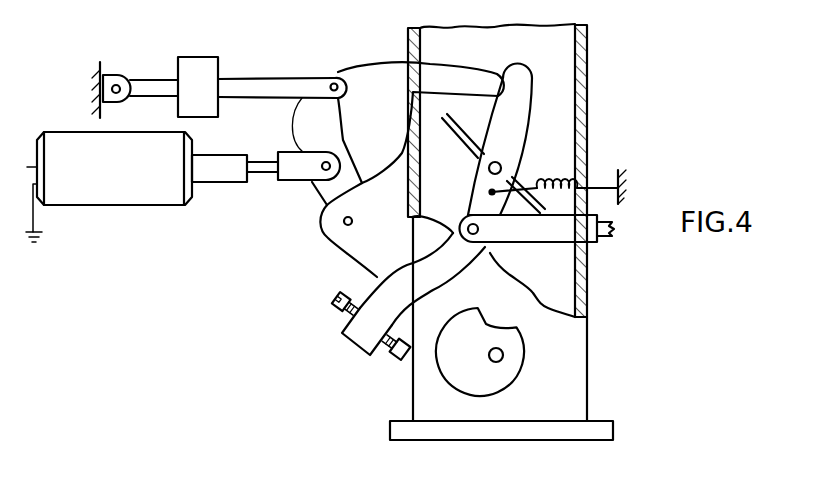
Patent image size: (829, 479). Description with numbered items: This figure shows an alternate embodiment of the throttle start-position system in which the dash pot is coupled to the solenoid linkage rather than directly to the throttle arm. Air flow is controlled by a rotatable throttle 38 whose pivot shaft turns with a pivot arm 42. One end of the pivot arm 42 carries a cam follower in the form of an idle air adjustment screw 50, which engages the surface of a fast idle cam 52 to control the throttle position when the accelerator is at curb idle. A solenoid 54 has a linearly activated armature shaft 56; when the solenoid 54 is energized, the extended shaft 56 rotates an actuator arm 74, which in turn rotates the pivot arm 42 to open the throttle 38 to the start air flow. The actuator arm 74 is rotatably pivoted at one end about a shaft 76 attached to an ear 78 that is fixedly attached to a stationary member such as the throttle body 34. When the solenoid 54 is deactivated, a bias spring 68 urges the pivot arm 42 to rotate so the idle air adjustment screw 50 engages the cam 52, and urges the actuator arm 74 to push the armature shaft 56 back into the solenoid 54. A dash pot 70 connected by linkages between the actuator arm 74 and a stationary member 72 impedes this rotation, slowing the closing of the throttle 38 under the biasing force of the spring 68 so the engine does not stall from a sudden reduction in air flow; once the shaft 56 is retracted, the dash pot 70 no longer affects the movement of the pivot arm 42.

The throttle body 34 is at (588, 100).
The throttle 38 is at (480, 152).
The pivot arm 42 is at (515, 117).
The idle air adjustment screw 50 is at (340, 307).
The fast idle cam 52 is at (512, 365).
The solenoid 54 is at (148, 190).
The armature shaft 56 is at (235, 173).
The spring 68 is at (550, 186).
The dash pot 70 is at (212, 72).
The stationary member 72 is at (93, 77).
The actuator arm 74 is at (378, 76).
The shaft 76 is at (345, 226).
The ear 78 is at (366, 250).